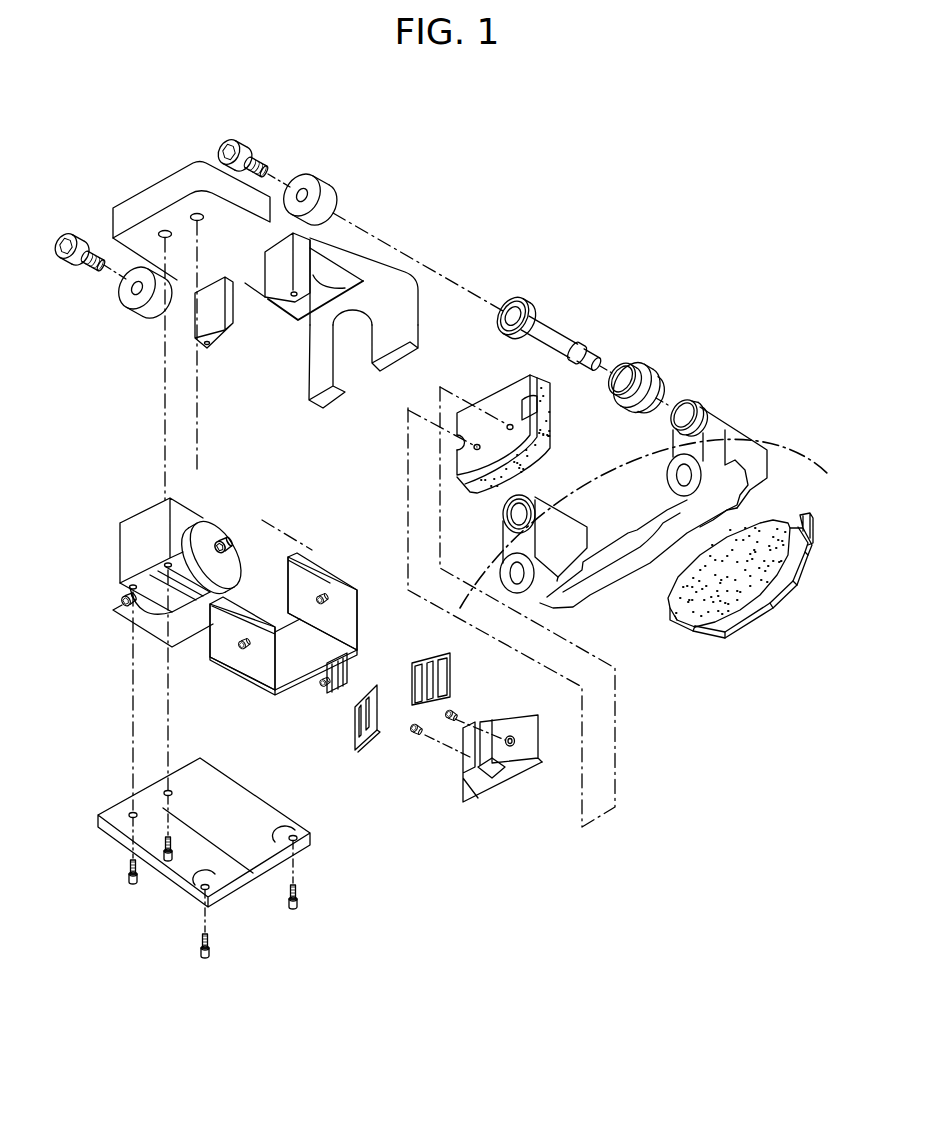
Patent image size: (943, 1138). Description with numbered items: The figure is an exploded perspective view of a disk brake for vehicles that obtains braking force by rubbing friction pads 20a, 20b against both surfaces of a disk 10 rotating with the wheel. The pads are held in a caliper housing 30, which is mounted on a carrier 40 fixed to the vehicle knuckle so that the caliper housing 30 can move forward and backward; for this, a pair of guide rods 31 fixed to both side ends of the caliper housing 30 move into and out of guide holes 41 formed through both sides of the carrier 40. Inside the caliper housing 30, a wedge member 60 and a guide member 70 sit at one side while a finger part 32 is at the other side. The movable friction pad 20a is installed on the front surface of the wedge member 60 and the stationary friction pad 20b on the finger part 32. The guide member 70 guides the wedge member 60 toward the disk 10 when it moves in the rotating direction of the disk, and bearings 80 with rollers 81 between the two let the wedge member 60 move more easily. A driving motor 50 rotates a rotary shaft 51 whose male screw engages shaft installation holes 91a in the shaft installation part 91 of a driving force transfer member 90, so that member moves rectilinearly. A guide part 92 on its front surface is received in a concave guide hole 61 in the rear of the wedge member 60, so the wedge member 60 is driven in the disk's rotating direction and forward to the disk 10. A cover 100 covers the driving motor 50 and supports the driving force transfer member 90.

The disk 10 is at (793, 453).
The movable friction pad 20a is at (487, 390).
The stationary friction pad 20b is at (747, 643).
The caliper housing 30 is at (386, 238).
The guide rod 31 is at (560, 337).
The finger part 32 is at (395, 362).
The carrier 40 is at (733, 418).
The guide hole 41 is at (680, 400).
The driving motor 50 is at (112, 580).
The rotary shaft 51 is at (226, 541).
The wedge member 60 is at (455, 803).
The guide hole 61 is at (486, 772).
The guide member 70 is at (280, 297).
The bearing 80 is at (411, 690).
The roller 81 is at (353, 730).
The driving force transfer member 90 is at (258, 698).
The shaft installation part 91 is at (352, 602).
The shaft installation hole 91a is at (324, 596).
The guide part 92 is at (328, 688).
The cover 100 is at (237, 877).